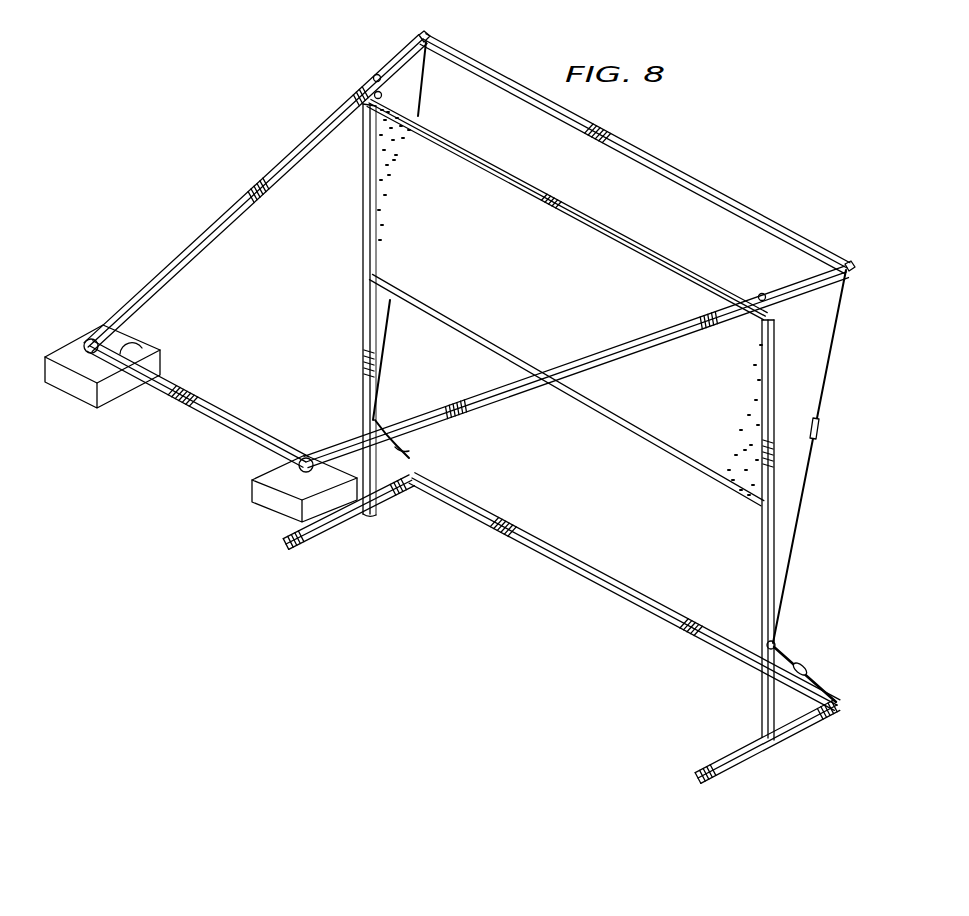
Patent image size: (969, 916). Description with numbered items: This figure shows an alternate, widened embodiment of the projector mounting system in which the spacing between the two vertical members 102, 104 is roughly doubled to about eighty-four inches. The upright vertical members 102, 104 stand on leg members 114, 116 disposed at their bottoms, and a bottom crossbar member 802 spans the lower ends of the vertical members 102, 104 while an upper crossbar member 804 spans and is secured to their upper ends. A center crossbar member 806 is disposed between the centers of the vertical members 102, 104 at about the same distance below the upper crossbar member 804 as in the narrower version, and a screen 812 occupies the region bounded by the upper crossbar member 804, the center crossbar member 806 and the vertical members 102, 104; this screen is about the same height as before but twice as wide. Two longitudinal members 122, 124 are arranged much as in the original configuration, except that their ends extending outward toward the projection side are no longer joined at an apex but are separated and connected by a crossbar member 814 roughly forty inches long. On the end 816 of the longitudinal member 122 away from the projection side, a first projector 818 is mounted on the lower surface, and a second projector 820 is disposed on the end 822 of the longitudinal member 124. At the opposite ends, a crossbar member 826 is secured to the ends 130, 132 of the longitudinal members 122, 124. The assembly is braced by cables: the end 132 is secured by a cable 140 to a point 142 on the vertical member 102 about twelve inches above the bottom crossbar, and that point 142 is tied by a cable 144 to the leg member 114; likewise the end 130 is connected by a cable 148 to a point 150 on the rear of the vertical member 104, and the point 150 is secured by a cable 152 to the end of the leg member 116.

The first vertical member 102 is at (764, 528).
The second vertical member 104 is at (362, 306).
The leg member 114 is at (762, 762).
The leg member 116 is at (340, 536).
The longitudinal member 122 is at (266, 176).
The longitudinal member 124 is at (586, 355).
The end of longitudinal member 122 130 is at (439, 30).
The end of longitudinal member 124 132 is at (846, 262).
The cable 140 is at (806, 530).
The point 142 is at (760, 644).
The cable 144 is at (830, 681).
The cable 148 is at (422, 94).
The point 150 is at (368, 404).
The cable 152 is at (417, 448).
The bottom crossbar member 802 is at (580, 572).
The upper crossbar member 804 is at (607, 222).
The center crossbar member 806 is at (648, 444).
The screen 812 is at (457, 252).
The crossbar member 814 is at (164, 373).
The end of member 122 816 is at (90, 336).
The first projector 818 is at (112, 392).
The second projector 820 is at (276, 502).
The end of longitudinal member 124 822 is at (308, 454).
The crossbar member 826 is at (706, 190).